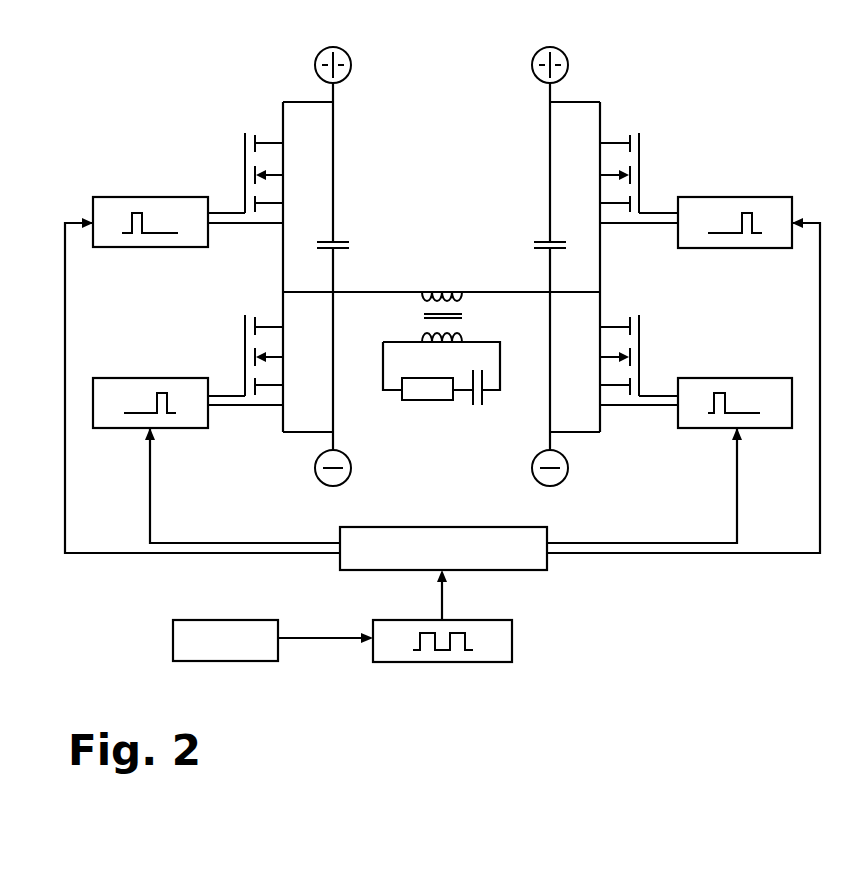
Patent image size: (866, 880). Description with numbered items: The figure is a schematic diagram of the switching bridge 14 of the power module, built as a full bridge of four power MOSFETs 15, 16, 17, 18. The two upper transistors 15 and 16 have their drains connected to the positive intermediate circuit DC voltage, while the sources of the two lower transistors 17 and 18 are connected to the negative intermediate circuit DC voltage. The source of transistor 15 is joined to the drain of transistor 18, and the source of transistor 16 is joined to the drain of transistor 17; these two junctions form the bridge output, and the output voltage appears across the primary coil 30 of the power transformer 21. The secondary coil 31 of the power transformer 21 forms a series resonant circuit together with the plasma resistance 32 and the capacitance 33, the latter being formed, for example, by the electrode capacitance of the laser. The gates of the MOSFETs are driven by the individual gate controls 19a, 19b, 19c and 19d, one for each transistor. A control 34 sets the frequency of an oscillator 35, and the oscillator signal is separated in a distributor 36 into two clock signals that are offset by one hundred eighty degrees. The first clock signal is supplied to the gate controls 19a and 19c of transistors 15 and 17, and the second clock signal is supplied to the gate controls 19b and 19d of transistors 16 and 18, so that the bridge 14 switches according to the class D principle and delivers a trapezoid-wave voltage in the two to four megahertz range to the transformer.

The switching bridge 14 is at (441, 153).
The power MOSFET 15 is at (255, 113).
The power MOSFET 16 is at (631, 112).
The power MOSFET 17 is at (631, 297).
The power MOSFET 18 is at (256, 297).
The gate control 19a is at (150, 209).
The gate control 19b is at (735, 209).
The gate control 19c is at (735, 388).
The gate control 19d is at (150, 388).
The power transformer 21 is at (432, 278).
The primary coil 30 is at (423, 299).
The secondary coil 31 is at (462, 334).
The plasma resistance 32 is at (430, 390).
The capacitance 33 is at (475, 405).
The control 34 is at (268, 633).
The oscillator 35 is at (505, 633).
The distributor 36 is at (545, 541).